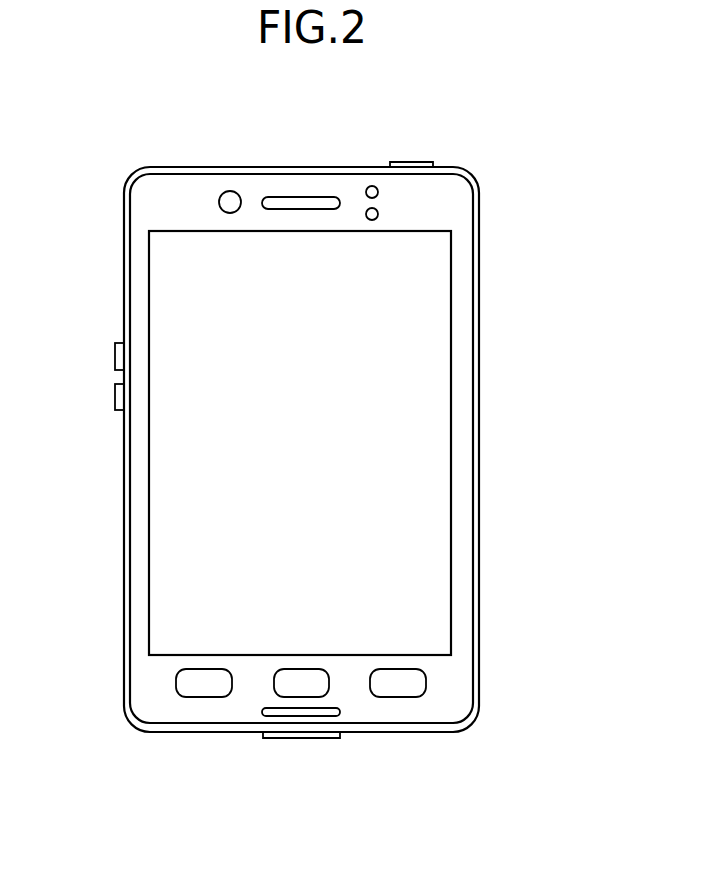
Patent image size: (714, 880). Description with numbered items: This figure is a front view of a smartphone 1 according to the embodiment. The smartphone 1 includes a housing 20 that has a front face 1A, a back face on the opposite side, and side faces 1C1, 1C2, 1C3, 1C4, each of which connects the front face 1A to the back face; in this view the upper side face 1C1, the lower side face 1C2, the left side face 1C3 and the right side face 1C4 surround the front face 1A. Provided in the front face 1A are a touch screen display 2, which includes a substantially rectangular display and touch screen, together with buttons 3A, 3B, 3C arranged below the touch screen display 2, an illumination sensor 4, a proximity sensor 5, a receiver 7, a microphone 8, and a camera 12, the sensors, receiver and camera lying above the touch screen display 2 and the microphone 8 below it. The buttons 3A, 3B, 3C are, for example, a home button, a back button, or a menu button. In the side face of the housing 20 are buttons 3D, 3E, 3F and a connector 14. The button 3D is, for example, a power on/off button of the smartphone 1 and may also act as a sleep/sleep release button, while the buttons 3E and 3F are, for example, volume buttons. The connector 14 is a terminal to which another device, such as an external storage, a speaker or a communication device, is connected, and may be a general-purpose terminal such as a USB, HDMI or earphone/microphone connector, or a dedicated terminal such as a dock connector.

The smartphone 1 is at (453, 143).
The front face 1A is at (137, 512).
The side face 1C1 is at (261, 167).
The side face 1C2 is at (160, 732).
The side face 1C3 is at (124, 588).
The side face 1C4 is at (473, 533).
The touch screen display 2 is at (385, 393).
The button 3A is at (204, 697).
The button 3B is at (274, 683).
The button 3C is at (398, 697).
The button 3D is at (411, 162).
The button 3E is at (115, 356).
The button 3F is at (115, 396).
The illumination sensor 4 is at (372, 186).
The proximity sensor 5 is at (378, 213).
The receiver 7 is at (300, 197).
The microphone 8 is at (339, 709).
The camera 12 is at (230, 191).
The connector 14 is at (300, 738).
The housing 20 is at (124, 301).